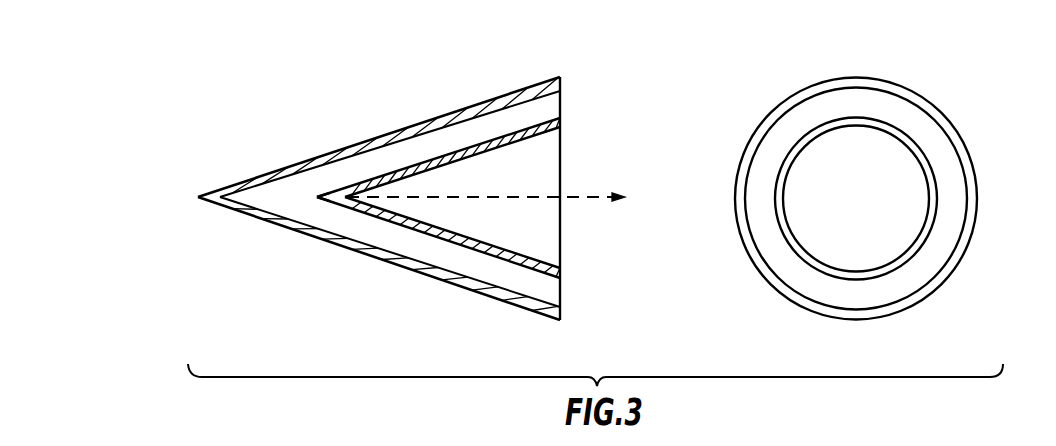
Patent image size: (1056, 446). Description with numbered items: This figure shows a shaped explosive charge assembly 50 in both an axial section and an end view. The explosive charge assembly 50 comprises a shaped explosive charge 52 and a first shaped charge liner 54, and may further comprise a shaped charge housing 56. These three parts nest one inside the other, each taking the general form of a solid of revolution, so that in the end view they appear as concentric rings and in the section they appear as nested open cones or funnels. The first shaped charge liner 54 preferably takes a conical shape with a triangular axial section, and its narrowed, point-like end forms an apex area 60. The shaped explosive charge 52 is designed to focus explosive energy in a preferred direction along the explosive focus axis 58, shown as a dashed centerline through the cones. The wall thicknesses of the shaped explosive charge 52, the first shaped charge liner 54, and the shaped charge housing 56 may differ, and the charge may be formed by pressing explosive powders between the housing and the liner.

The explosive charge assembly 50 is at (617, 180).
The shaped explosive charge 52 is at (562, 103).
The first shaped charge liner 54 is at (562, 122).
The shaped charge housing 56 is at (562, 77).
The explosive focus axis 58 is at (583, 197).
The apex area 60 is at (320, 200).